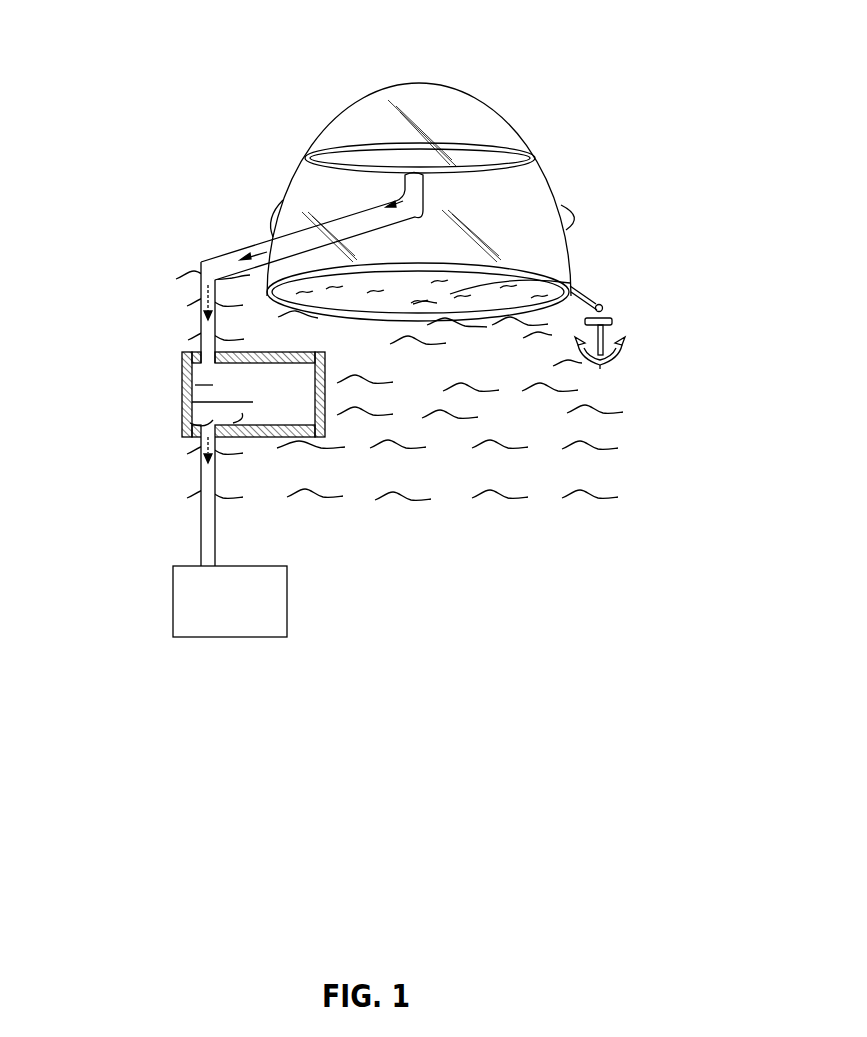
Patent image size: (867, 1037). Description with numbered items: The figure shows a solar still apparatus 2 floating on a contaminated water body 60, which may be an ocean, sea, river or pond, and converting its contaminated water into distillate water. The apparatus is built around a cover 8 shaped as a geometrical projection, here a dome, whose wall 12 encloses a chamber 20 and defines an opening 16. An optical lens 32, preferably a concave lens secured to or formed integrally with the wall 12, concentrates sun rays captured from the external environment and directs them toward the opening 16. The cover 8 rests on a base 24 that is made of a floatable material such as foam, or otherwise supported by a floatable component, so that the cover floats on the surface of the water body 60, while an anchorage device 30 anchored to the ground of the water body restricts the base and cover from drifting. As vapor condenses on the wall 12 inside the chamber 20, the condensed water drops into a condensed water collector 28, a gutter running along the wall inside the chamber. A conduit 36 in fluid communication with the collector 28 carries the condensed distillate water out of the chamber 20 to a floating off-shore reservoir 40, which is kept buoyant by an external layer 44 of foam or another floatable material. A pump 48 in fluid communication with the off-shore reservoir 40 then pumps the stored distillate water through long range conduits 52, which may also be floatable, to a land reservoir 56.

The solar still apparatus 2 is at (250, 102).
The cover 8 is at (505, 50).
The wall 12 is at (499, 104).
The opening 16 is at (560, 277).
The chamber 20 is at (480, 227).
The base 24 is at (568, 262).
The condensed water collector 28 is at (519, 136).
The anchorage device 30 is at (616, 321).
The optical lens 32 is at (280, 200).
The conduit 36 is at (213, 262).
The off-shore reservoir 40 is at (182, 373).
The external layer 44 is at (183, 352).
The pump 48 is at (193, 427).
The long range conduits 52 is at (200, 533).
The land reservoir 56 is at (193, 612).
The contaminated water body 60 is at (497, 428).